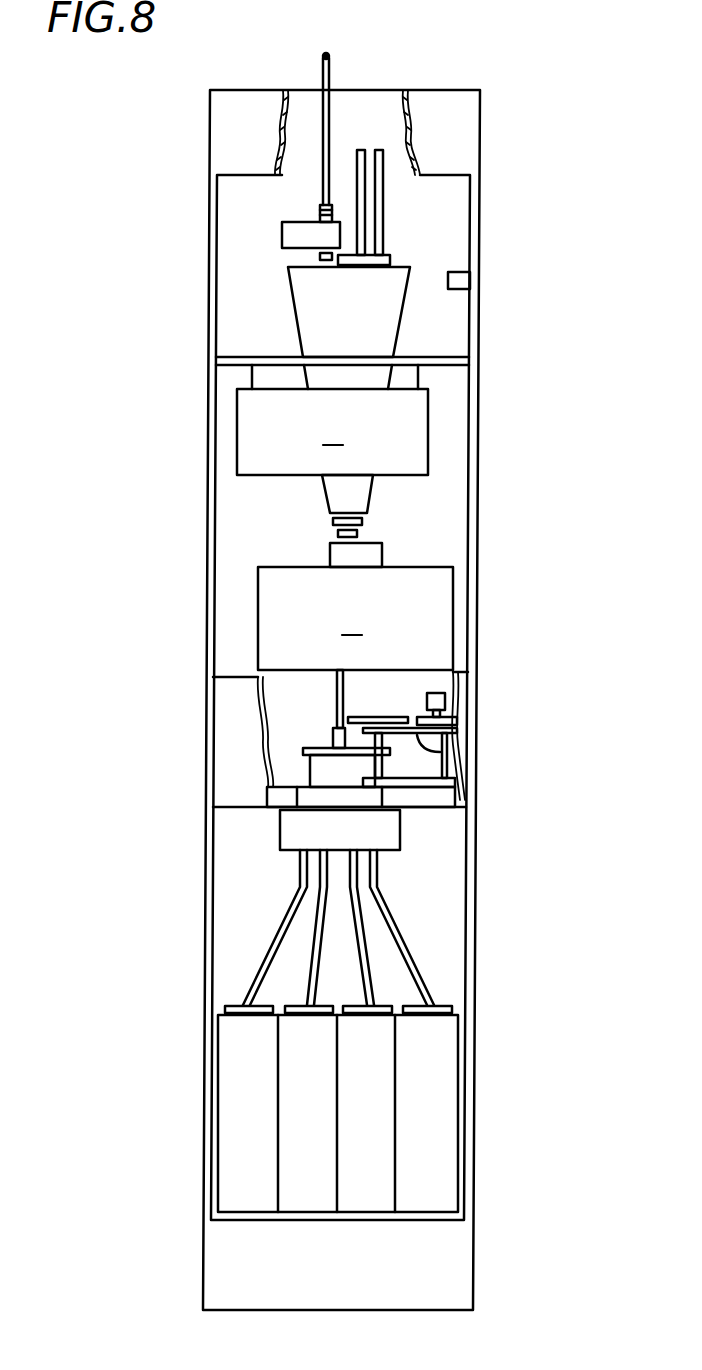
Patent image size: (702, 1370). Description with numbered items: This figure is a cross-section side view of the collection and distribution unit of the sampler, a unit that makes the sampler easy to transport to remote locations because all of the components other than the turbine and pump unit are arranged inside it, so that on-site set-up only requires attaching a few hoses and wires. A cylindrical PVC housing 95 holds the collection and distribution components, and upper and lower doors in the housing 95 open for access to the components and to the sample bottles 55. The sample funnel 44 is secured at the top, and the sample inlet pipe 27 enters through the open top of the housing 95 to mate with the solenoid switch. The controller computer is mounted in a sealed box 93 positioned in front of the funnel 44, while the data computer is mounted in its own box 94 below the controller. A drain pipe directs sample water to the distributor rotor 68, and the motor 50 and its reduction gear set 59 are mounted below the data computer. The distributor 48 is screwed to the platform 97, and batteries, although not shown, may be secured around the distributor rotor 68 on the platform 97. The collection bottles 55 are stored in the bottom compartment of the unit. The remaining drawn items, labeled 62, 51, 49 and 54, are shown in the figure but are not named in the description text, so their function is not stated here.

The sample inlet pipe 27 is at (330, 72).
The housing 95 is at (210, 140).
The sample funnel 44 is at (278, 310).
The sealed box 93 is at (430, 410).
The coupling plates 62 is at (318, 532).
The box 94 is at (442, 582).
The motor 50 is at (447, 695).
The switch mounting plate 51 is at (450, 712).
The reduction gear set 59 is at (457, 752).
The platform plate 49 is at (303, 750).
The distributor rotor 68 is at (352, 768).
The platform 97 is at (427, 800).
The distributor 48 is at (270, 828).
The tubes / leads 54 is at (412, 913).
The collection bottles 55 is at (446, 1083).